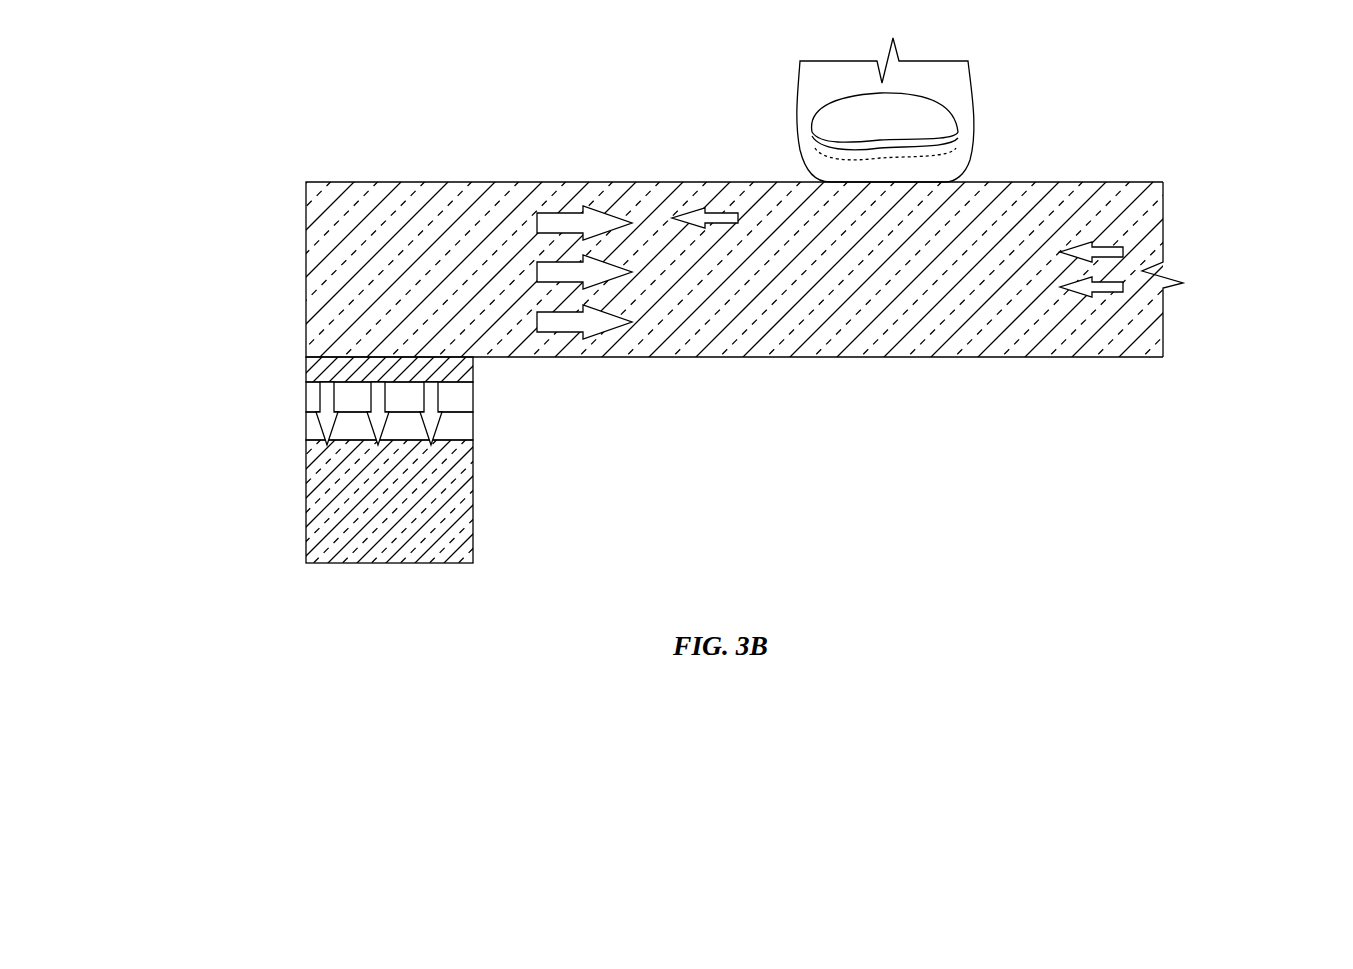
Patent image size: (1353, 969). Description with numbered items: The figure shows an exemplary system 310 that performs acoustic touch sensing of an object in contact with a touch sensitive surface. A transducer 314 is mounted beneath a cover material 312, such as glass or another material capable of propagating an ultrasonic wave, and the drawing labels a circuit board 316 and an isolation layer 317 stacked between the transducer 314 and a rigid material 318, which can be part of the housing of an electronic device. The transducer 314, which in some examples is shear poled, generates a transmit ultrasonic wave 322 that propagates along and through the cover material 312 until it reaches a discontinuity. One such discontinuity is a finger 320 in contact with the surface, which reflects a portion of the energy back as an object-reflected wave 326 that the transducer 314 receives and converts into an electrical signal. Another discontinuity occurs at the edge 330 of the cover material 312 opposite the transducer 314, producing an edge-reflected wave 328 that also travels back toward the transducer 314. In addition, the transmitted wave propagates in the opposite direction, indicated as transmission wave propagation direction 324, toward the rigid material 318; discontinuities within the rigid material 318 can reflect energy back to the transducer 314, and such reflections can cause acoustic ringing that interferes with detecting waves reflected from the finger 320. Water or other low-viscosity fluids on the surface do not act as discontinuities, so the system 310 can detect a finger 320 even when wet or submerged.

The system 310 is at (1238, 47).
The cover material 312 is at (306, 200).
The transducer 314 is at (473, 366).
The circuit board 316 is at (473, 395).
The isolation layer 317 is at (473, 425).
The rigid material 318 is at (473, 520).
The finger 320 is at (984, 128).
The transmit ultrasonic wave 322 is at (548, 213).
The transmission wave propagation direction 324 is at (306, 400).
The object-reflected wave 326 is at (720, 209).
The edge-reflected wave 328 is at (1123, 252).
The edge 330 is at (1163, 364).